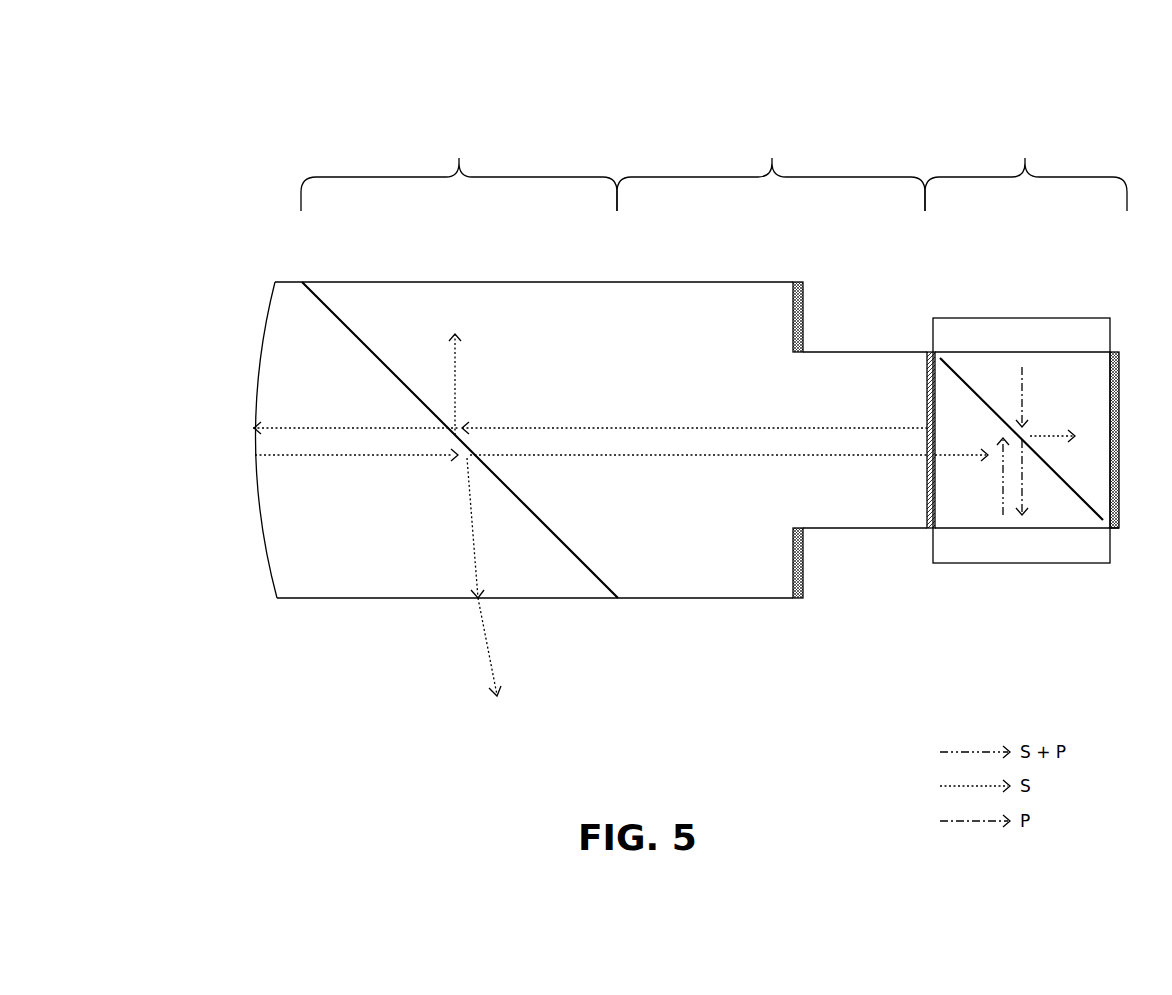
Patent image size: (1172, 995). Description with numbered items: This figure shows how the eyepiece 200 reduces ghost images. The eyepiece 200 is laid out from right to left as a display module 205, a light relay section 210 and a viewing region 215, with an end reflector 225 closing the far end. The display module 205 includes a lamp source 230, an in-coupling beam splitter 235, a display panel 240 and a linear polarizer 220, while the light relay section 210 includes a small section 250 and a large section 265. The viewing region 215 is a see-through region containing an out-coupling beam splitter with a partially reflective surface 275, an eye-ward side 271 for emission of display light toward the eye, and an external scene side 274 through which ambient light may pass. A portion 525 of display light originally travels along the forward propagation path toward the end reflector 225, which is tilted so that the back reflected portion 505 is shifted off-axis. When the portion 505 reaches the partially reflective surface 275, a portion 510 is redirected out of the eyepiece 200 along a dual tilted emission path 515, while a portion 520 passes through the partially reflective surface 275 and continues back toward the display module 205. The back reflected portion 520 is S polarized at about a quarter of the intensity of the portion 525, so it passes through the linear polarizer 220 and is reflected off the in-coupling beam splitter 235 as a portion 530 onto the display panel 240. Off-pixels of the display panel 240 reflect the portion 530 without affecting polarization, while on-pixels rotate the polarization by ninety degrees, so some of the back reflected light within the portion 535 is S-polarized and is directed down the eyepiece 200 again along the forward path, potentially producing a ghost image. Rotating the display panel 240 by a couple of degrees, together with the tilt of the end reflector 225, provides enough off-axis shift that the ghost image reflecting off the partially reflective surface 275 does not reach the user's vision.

The eyepiece 200 is at (140, 188).
The display module 205 is at (1026, 151).
The light relay section 210 is at (771, 156).
The viewing region 215 is at (459, 155).
The linear polarizer 220 is at (927, 478).
The end reflector 225 is at (272, 583).
The lamp source 230 is at (1065, 318).
The in-coupling beam splitter 235 is at (1061, 384).
The display panel 240 is at (1006, 557).
The small section 250 is at (886, 382).
The large section 265 is at (742, 312).
The eye-ward side 271 is at (413, 630).
The external scene side 274 is at (406, 246).
The partially reflective surface 275 is at (363, 342).
The back reflected portion of display light 505 is at (408, 455).
The redirected portion 510 is at (472, 525).
The dual tilted emission path 515 is at (485, 632).
The back reflected portion passing through partially reflective surface 520 is at (797, 455).
The portion originally travelling along forward propagation path 525 is at (650, 428).
The portion reflected off in-coupling beam splitter 530 is at (1023, 480).
The back reflected light portion 535 is at (1003, 475).